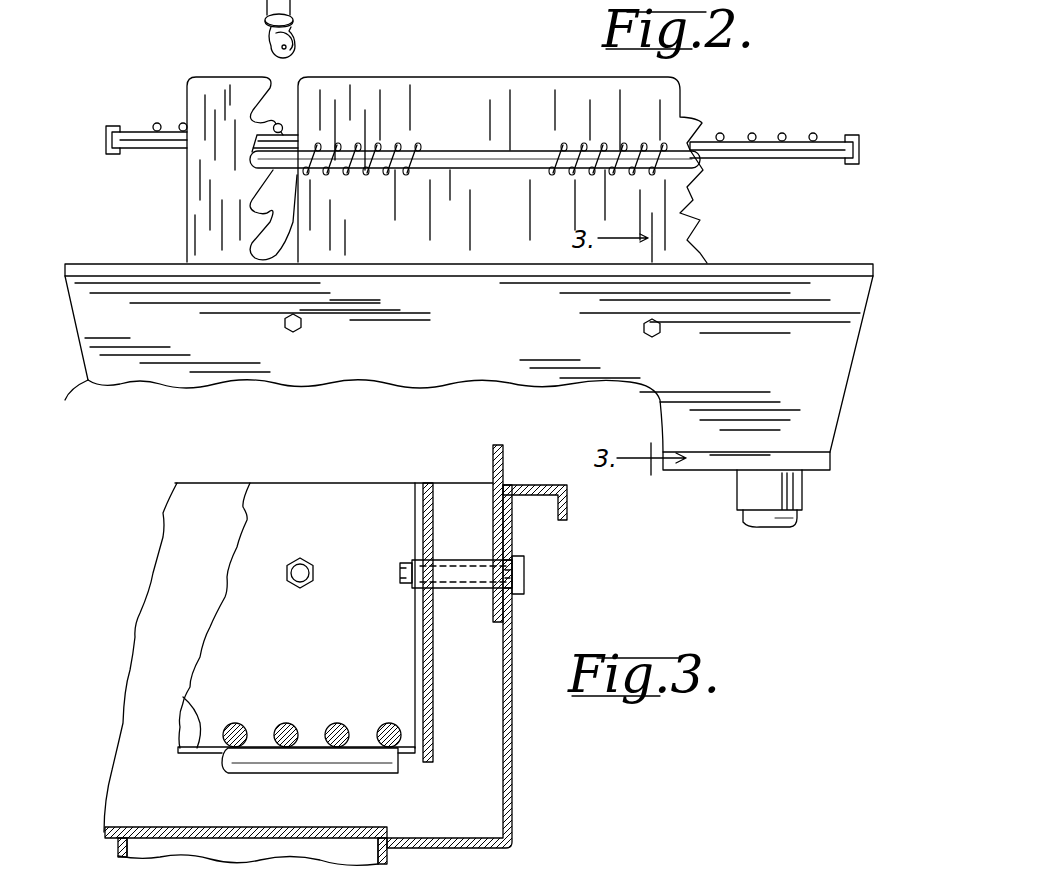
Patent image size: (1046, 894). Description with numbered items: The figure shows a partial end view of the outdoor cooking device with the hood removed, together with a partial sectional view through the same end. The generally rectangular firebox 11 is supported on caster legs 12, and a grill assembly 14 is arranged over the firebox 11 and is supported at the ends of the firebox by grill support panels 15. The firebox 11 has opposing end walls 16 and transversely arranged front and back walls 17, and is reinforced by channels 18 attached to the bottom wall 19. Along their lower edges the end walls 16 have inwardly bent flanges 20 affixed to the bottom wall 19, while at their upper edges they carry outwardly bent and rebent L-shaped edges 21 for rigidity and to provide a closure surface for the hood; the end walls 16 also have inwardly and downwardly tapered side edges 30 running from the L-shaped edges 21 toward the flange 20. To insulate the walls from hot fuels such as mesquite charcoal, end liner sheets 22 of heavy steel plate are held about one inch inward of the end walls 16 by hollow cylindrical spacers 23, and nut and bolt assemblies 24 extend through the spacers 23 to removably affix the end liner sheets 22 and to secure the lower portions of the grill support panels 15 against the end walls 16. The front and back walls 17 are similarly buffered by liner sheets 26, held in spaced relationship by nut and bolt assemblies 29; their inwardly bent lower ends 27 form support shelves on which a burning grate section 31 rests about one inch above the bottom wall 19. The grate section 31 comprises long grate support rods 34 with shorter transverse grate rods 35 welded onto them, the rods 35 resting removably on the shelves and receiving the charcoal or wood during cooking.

In FIG. 2, the firebox 11 is at (491, 383).
In FIG. 3, the firebox 11 is at (545, 642).
In FIG. 2, the caster legs 12 is at (795, 525).
In FIG. 2, the grill assembly 14 is at (762, 120).
In FIG. 2, the grill support panels 15 is at (490, 128).
In FIG. 3, the grill support panels 15 is at (493, 458).
In FIG. 2, the end walls 16 is at (490, 344).
In FIG. 3, the end walls 16 is at (513, 735).
In FIG. 3, the front and back walls 17 is at (140, 635).
In FIG. 2, the channels 18 is at (830, 470).
In FIG. 3, the channels 18 is at (110, 843).
In FIG. 2, the bottom wall 19 is at (723, 453).
In FIG. 3, the bottom wall 19 is at (160, 830).
In FIG. 3, the inwardly bent flanges 20 is at (470, 856).
In FIG. 2, the L-shaped edges 21 is at (770, 264).
In FIG. 3, the L-shaped edges 21 is at (530, 500).
In FIG. 3, the end liner sheets 22 is at (433, 668).
In FIG. 3, the hollow cylindrical spacers 23 is at (462, 556).
In FIG. 2, the nut and bolt assemblies 24 is at (301, 324).
In FIG. 3, the nut and bolt assemblies 24 is at (526, 575).
In FIG. 3, the liner sheets 26 is at (235, 602).
In FIG. 3, the inwardly bent lower ends 27 is at (186, 699).
In FIG. 3, the nut and bolt assemblies 29 is at (308, 583).
In FIG. 2, the tapered side edges 30 is at (883, 345).
In FIG. 3, the burning grate section 31 is at (348, 702).
In FIG. 3, the grate support rods 34 is at (312, 770).
In FIG. 3, the transverse grate rods 35 is at (243, 728).